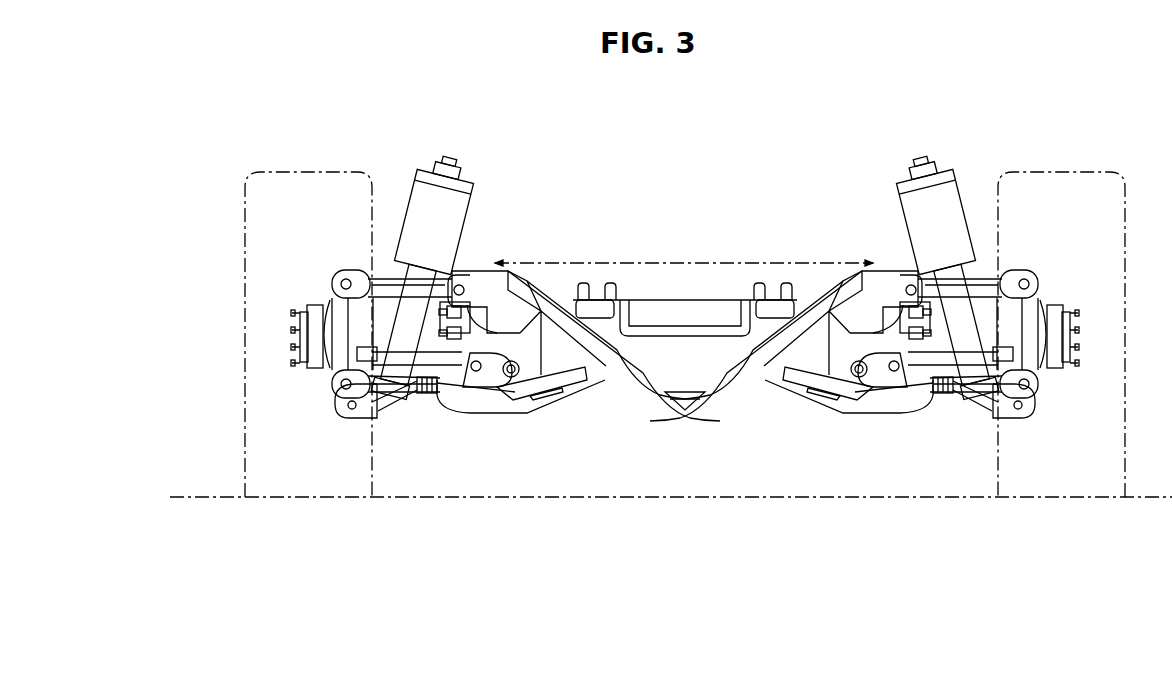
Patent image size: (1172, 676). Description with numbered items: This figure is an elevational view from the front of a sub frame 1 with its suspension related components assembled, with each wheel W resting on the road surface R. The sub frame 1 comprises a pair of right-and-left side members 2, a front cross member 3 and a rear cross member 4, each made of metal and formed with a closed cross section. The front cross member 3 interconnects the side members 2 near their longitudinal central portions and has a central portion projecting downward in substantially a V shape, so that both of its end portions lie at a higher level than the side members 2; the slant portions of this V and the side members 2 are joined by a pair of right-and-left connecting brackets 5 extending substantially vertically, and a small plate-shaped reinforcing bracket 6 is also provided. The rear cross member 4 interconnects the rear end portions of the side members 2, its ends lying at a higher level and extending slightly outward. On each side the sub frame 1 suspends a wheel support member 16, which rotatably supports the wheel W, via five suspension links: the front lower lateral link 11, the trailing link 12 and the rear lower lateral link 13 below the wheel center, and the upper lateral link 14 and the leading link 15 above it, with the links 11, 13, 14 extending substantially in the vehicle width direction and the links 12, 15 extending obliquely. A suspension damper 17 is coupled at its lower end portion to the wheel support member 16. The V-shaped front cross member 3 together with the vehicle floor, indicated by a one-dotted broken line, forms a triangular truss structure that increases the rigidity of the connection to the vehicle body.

The sub frame 1 is at (750, 187).
The side members 2 is at (497, 410).
The front cross member 3 is at (648, 403).
The rear cross member 4 is at (673, 312).
The connecting brackets 5 is at (548, 358).
The reinforcing bracket 6 is at (574, 380).
The front lower lateral link 11 is at (374, 398).
The trailing link 12 is at (403, 402).
The rear lower lateral link 13 is at (411, 384).
The upper lateral link 14 is at (385, 282).
The leading link 15 is at (393, 285).
The wheel support member 16 is at (322, 372).
The suspension damper 17 is at (461, 203).
The wheel W is at (288, 172).
The road surface R is at (205, 496).